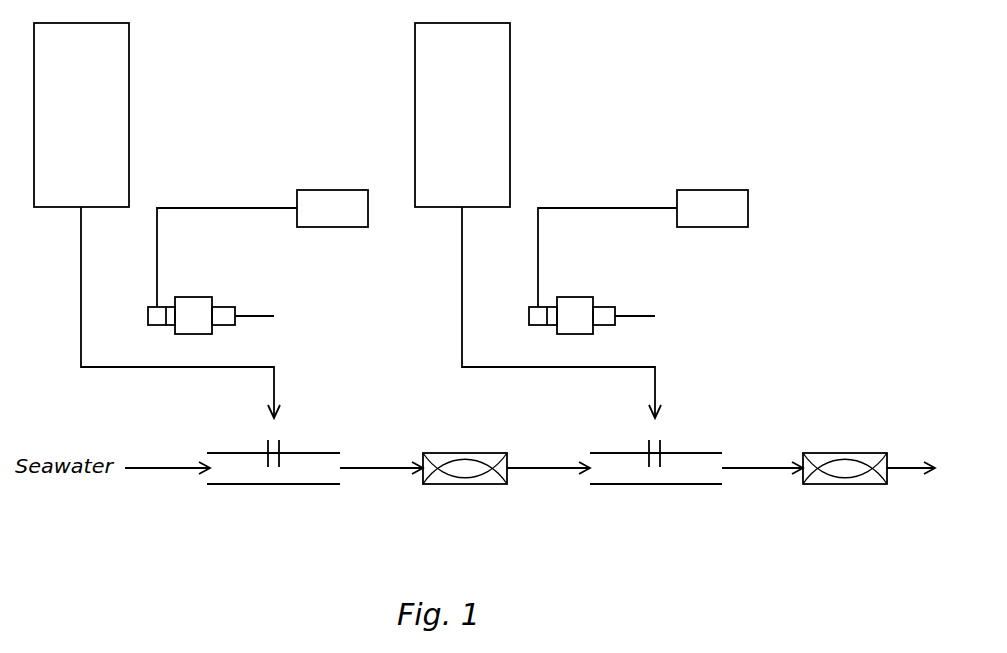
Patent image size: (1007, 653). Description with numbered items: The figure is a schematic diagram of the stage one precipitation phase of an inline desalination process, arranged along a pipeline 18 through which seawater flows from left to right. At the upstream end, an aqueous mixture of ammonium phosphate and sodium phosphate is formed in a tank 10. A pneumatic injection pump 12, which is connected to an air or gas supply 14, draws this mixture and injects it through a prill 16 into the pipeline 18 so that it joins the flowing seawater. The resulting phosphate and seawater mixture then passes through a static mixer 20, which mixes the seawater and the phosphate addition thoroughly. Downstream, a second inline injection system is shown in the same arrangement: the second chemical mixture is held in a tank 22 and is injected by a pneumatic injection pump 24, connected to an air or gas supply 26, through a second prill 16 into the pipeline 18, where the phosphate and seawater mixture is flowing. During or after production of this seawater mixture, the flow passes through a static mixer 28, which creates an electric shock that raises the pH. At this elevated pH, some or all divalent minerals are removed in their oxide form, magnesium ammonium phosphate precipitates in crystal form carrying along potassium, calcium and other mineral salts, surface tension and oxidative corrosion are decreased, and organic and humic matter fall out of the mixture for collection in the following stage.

The tank 10 is at (129, 115).
The pneumatic injection pump 12 is at (193, 297).
The air or gas supply 14 is at (333, 190).
The prill 16 is at (280, 443).
The pipeline 18 is at (273, 485).
The static mixer 20 is at (463, 485).
The tank 22 is at (510, 115).
The pneumatic injection pump 24 is at (580, 297).
The second controller 26 is at (713, 190).
The static mixer 28 is at (845, 485).